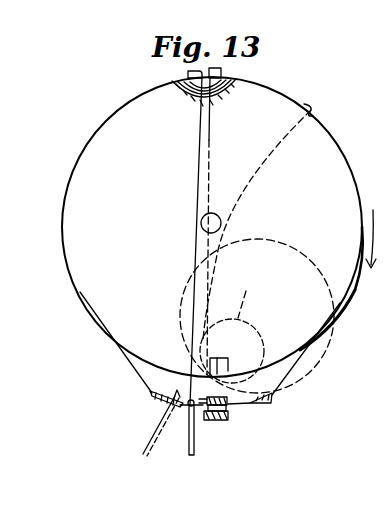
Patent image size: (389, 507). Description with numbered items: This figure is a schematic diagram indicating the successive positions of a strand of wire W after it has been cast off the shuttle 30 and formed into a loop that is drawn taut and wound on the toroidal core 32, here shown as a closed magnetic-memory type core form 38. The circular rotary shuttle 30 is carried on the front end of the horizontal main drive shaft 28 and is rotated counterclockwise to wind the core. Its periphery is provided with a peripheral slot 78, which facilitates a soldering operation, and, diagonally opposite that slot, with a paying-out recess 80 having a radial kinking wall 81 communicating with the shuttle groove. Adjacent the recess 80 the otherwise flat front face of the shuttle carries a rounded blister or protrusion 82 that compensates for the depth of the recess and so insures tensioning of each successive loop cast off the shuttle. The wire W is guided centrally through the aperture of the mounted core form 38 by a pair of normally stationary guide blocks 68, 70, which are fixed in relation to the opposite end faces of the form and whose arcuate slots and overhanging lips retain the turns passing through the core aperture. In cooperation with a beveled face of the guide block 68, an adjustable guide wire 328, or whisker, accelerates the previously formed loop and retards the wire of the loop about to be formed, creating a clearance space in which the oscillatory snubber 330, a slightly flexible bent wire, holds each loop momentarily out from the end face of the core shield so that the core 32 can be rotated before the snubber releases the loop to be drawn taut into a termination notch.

The shuttle 30 is at (69, 178).
The wire W is at (209, 170).
The paying-out recess 80 is at (188, 74).
The radial kinking wall 81 is at (337, 113).
The blister 82 is at (186, 97).
The main drive shaft 28 is at (201, 222).
The peripheral slot 78 is at (222, 370).
The guide block 68 is at (157, 397).
The guide block 70 is at (270, 403).
The core form 38 is at (225, 417).
The oscillatory snubber 330 is at (187, 447).
The guide wire 328 is at (152, 441).
The toroidal core 32 is at (210, 389).